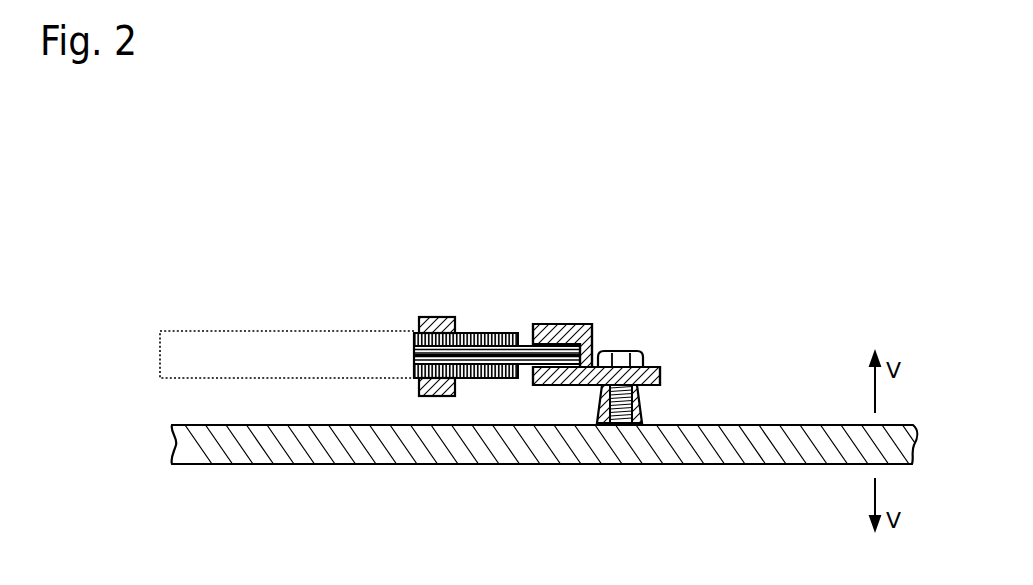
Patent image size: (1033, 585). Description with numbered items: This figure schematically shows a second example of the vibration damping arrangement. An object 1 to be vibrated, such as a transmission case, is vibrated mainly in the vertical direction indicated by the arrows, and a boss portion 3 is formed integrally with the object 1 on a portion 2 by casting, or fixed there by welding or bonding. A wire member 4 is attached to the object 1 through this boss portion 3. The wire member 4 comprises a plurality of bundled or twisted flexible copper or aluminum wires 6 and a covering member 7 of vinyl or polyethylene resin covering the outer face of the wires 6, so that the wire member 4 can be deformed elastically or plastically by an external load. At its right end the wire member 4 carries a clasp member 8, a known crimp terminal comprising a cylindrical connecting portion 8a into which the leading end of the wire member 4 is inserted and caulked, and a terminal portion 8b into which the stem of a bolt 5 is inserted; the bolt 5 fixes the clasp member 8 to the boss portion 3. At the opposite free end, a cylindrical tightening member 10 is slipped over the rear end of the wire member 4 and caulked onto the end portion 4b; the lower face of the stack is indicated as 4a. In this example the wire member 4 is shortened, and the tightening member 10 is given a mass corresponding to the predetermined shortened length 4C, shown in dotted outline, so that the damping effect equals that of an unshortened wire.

The object to be vibrated 1 is at (370, 445).
The portion 2 is at (573, 470).
The boss portion 3 is at (643, 415).
The wire member 4 is at (475, 313).
The lower layer 4a is at (480, 382).
The end portion 4b is at (410, 393).
The predetermined shortened length 4C is at (262, 348).
The bolt 5 is at (622, 360).
The wires 6 is at (413, 352).
The covering member 7 is at (500, 332).
The clasp member 8 is at (590, 313).
The cylindrical connecting portion 8a is at (547, 323).
The terminal portion 8b is at (662, 367).
The tightening member 10 is at (423, 318).